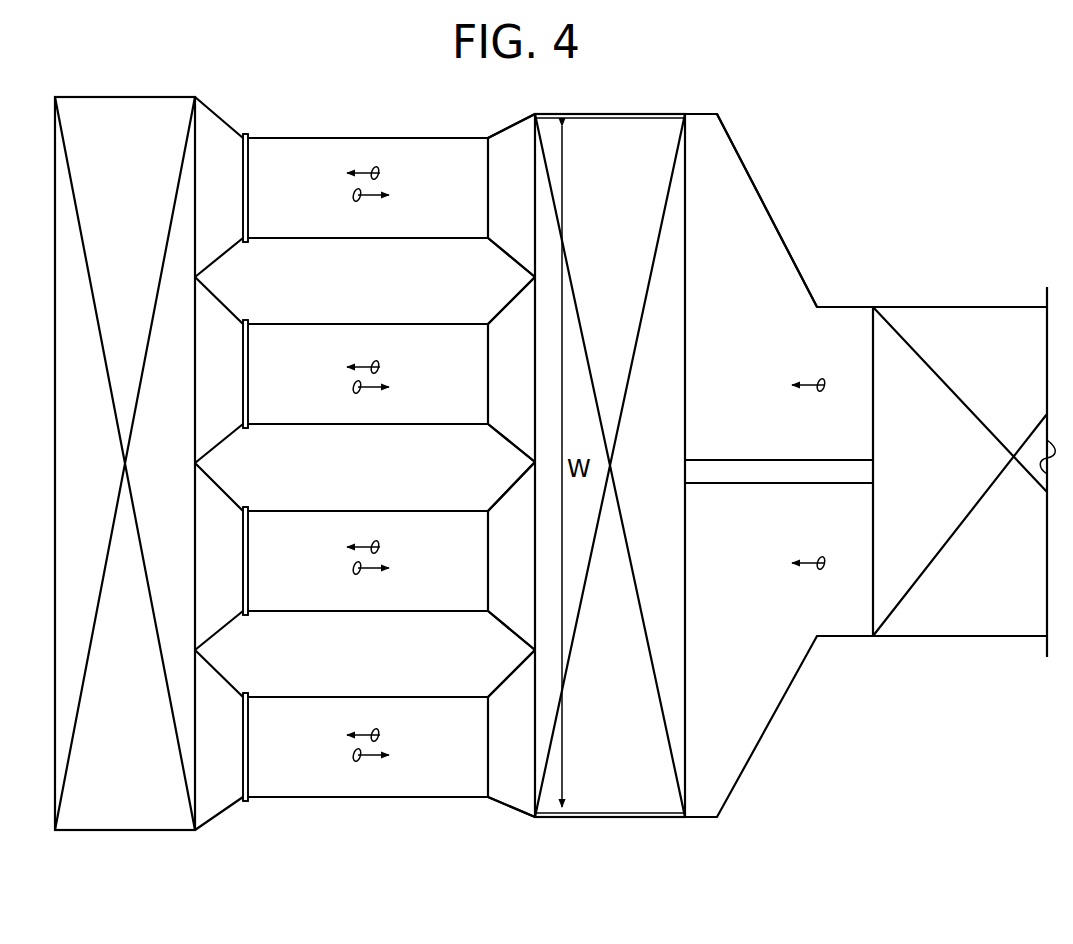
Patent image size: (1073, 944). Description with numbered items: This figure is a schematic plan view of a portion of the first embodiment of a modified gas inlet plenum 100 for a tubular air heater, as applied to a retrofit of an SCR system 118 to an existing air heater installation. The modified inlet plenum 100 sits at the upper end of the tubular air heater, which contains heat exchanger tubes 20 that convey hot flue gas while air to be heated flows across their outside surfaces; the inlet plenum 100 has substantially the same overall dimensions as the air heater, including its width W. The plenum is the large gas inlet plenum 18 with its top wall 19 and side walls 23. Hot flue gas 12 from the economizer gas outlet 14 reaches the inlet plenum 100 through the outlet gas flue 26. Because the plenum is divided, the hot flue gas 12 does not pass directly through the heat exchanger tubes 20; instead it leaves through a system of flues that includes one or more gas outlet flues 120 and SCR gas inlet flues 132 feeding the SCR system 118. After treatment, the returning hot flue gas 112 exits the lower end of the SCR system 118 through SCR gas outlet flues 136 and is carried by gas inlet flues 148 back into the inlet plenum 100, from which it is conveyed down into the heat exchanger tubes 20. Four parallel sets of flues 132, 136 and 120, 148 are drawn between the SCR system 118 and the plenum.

The modified gas inlet plenum 100 is at (796, 169).
The hot flue gas 12 is at (378, 167).
The economizer gas outlet 14 is at (931, 486).
The gas inlet plenum 18 is at (655, 117).
The top wall 19 is at (626, 183).
The heat exchanger tubes 20 is at (683, 373).
The side walls 23 is at (598, 114).
The outlet gas flue 26 is at (770, 270).
The hot flue gas returning from the SCR system 112 is at (359, 201).
The SCR system 118 is at (143, 185).
The gas outlet flues 120 is at (514, 142).
The SCR gas inlet flues 132 is at (218, 133).
The SCR gas outlet flues 136 is at (218, 133).
The gas inlet flues 148 is at (514, 142).